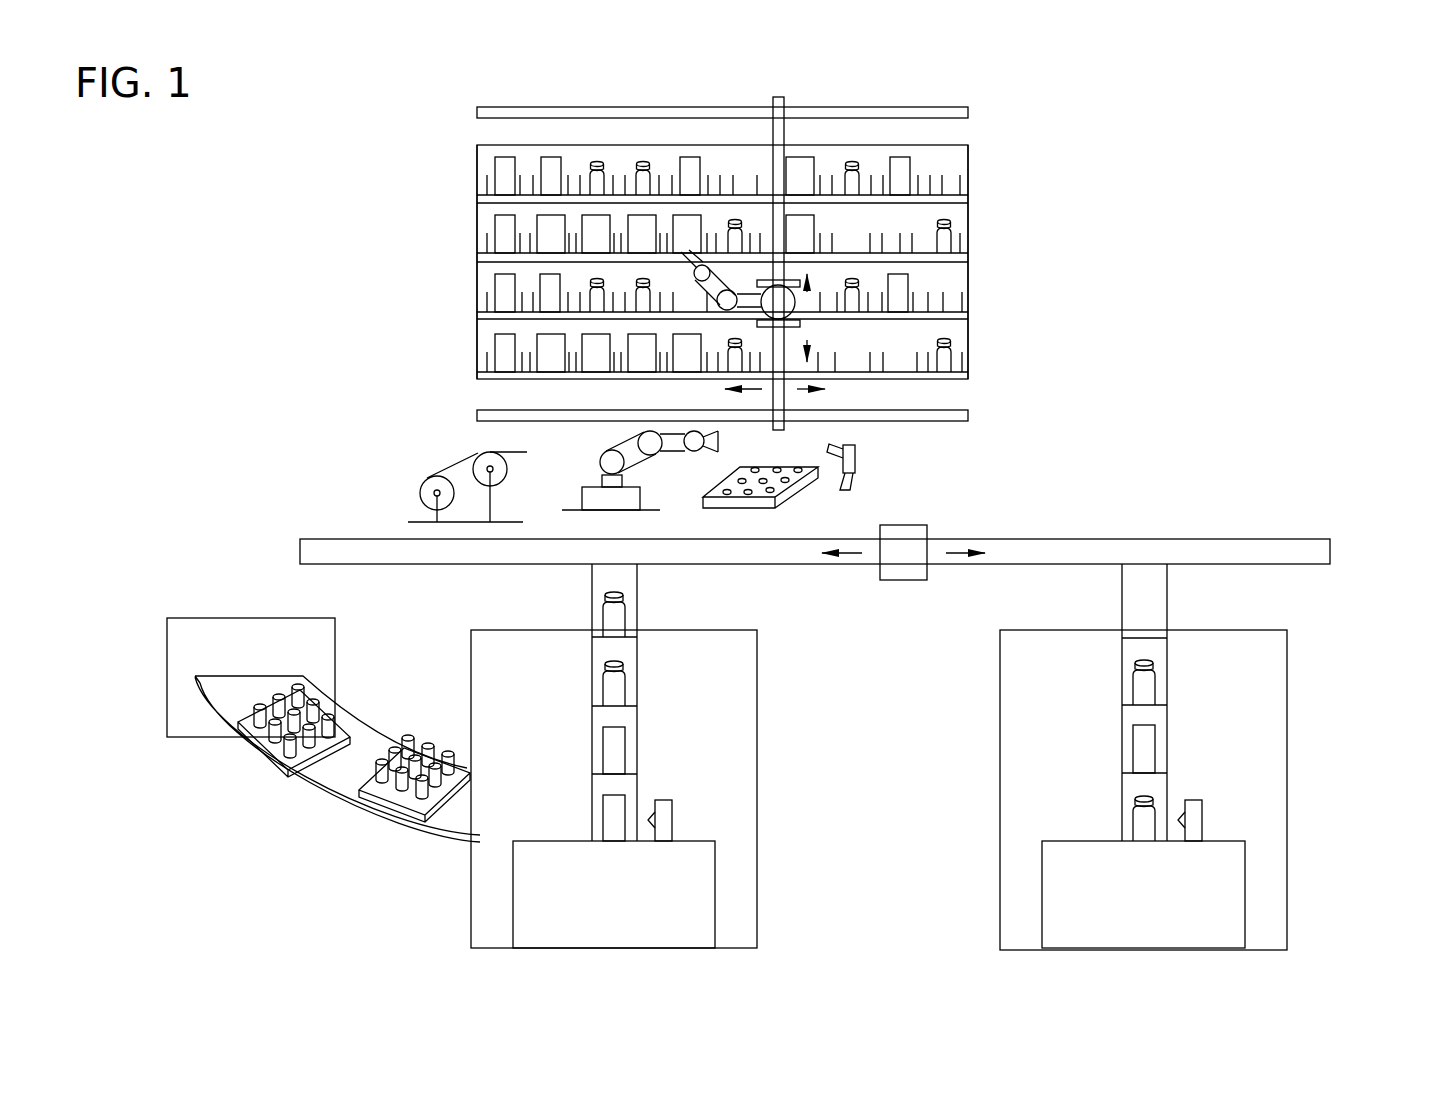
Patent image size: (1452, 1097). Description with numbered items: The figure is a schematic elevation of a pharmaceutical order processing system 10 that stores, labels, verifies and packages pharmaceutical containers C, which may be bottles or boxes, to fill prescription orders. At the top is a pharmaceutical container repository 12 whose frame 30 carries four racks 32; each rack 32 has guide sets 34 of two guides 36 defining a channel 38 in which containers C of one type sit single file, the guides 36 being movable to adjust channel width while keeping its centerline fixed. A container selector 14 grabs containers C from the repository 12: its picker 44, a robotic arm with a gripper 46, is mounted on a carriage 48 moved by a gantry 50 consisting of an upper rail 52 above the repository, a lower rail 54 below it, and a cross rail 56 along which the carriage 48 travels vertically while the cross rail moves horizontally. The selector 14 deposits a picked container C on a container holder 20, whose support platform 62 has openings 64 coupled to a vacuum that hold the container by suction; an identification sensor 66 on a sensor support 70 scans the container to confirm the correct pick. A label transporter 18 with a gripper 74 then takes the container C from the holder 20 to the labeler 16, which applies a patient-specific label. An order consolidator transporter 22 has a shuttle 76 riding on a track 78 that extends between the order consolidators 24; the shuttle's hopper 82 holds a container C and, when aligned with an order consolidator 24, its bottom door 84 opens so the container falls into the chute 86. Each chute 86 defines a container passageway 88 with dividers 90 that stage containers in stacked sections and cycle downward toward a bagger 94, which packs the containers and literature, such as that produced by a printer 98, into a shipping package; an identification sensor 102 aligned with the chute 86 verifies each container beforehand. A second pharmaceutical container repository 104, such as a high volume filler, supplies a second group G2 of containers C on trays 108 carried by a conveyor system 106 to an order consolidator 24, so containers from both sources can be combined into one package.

The pharmaceutical order processing system 10 is at (1348, 198).
The pharmaceutical container repository 12 is at (990, 130).
The container selector 14 is at (792, 94).
The labeler 16 is at (426, 446).
The label transporter 18 is at (592, 446).
The container holder 20 is at (826, 494).
The order consolidator transporter 22 is at (1066, 520).
The order consolidator 24 is at (776, 714).
The frame 30 is at (969, 377).
The rack 32 is at (476, 197).
The guide set 34 is at (977, 171).
The guide 36 is at (745, 173).
The channel 38 is at (738, 185).
The picker 44 is at (707, 299).
The gripper 46 is at (677, 266).
The carriage 48 is at (820, 295).
The gantry 50 is at (806, 405).
The upper rail 52 is at (906, 106).
The lower rail 54 is at (963, 421).
The cross rail 56 is at (784, 345).
The support platform 62 is at (763, 508).
The openings 64 is at (753, 470).
The identification sensor 66 is at (854, 447).
The sensor support 70 is at (855, 477).
The gripper 74 is at (708, 464).
The shuttle 76 is at (935, 510).
The track 78 is at (1287, 534).
The hopper 82 is at (928, 533).
The bottom door 84 is at (912, 583).
The chute 86 is at (588, 610).
The container passageway 88 is at (1145, 615).
The divider 90 is at (634, 640).
The bagger 94 is at (717, 880).
The printer 98 is at (610, 717).
The identification sensor 102 is at (705, 803).
The second pharmaceutical container repository 104 is at (205, 618).
The conveyor system 106 is at (302, 805).
The tray 108 is at (243, 735).
The pharmaceutical container C is at (552, 158).
The second group G2 is at (476, 272).